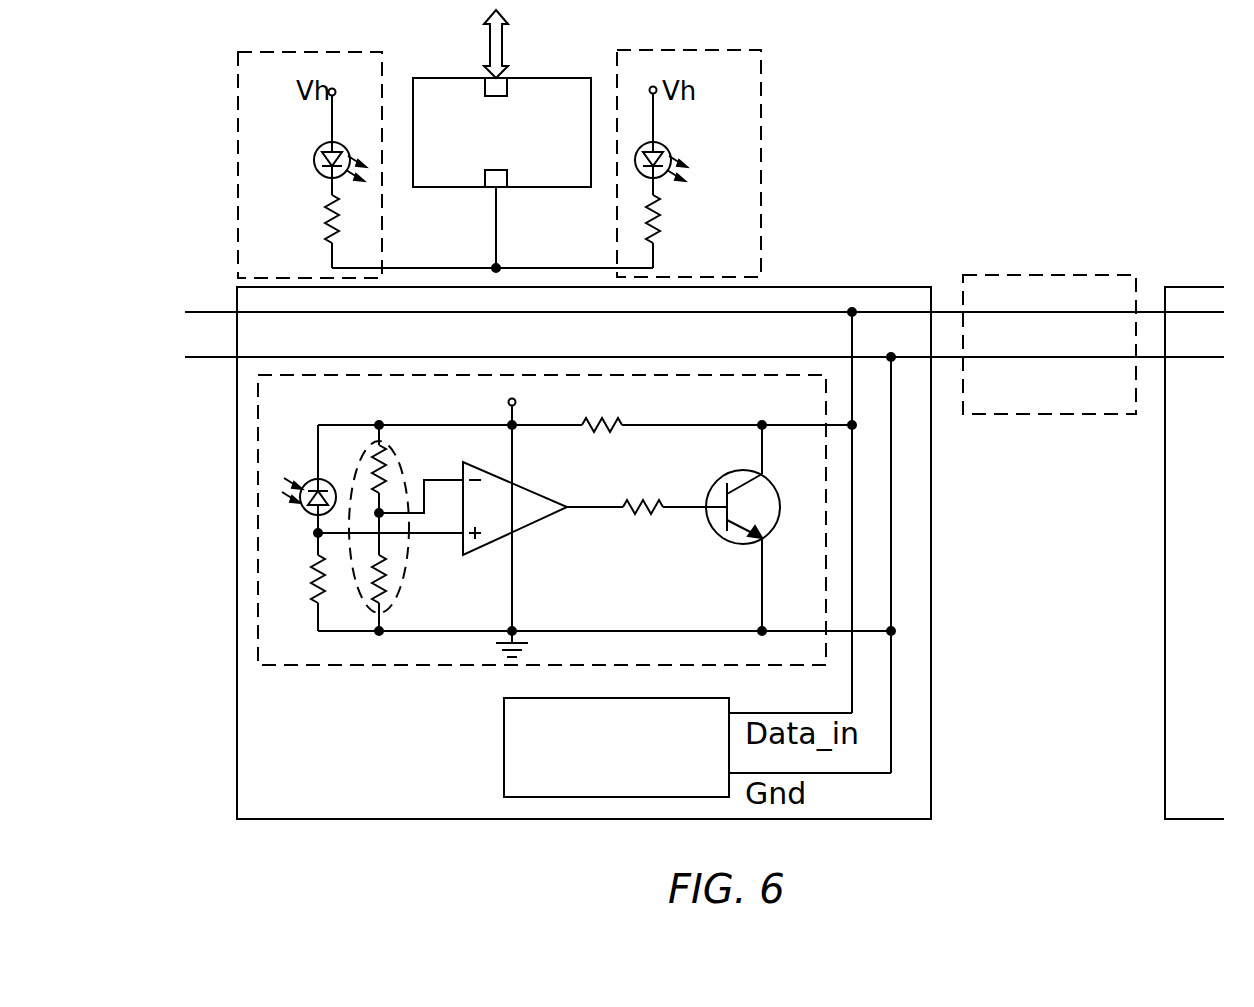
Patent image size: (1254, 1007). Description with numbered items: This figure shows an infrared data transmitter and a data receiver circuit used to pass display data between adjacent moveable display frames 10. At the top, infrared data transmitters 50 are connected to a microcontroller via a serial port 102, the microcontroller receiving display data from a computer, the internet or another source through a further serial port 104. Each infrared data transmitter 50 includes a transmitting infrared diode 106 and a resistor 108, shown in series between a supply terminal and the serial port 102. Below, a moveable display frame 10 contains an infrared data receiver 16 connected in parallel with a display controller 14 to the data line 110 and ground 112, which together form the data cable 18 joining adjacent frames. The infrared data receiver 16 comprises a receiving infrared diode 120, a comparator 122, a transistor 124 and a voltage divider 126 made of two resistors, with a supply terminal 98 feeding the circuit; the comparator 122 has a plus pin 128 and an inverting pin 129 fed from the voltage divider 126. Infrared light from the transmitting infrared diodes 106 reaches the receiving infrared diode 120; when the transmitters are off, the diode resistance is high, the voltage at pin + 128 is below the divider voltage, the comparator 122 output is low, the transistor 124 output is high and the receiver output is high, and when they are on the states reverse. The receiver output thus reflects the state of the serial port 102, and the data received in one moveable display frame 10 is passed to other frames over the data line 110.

The moveable display frame 10 is at (931, 725).
The display controller 14 is at (505, 735).
The infrared data receiver 16 is at (322, 665).
The data cable 18 is at (1028, 414).
The infrared data transmitter 50 is at (318, 52).
The supply voltage terminal Vcc 98 is at (518, 402).
The serial port 102 is at (498, 190).
The serial port 104 is at (508, 62).
The transmitting infrared diode 106 is at (316, 150).
The resistor 108 is at (326, 226).
The data line 110 is at (1037, 314).
The ground 112 is at (1063, 355).
The receiving infrared diode 120 is at (315, 468).
The comparator 122 is at (500, 510).
The transistor 124 is at (740, 545).
The voltage divider 126 is at (406, 585).
The pin + 128 is at (470, 555).
The inverting input 129 is at (472, 472).